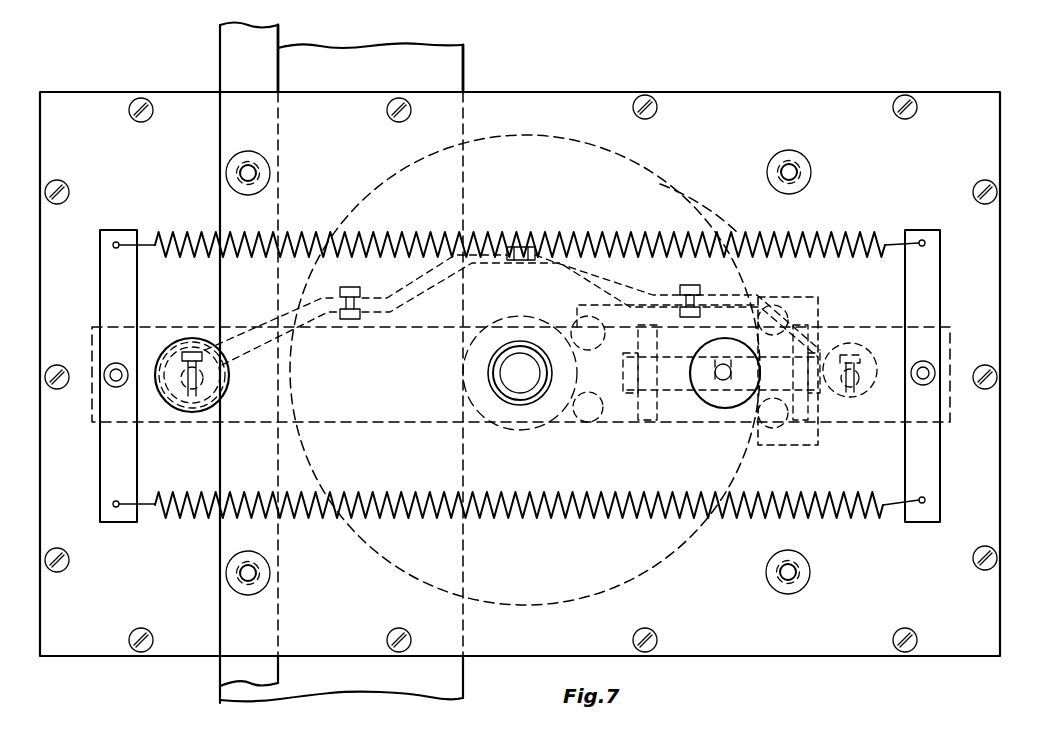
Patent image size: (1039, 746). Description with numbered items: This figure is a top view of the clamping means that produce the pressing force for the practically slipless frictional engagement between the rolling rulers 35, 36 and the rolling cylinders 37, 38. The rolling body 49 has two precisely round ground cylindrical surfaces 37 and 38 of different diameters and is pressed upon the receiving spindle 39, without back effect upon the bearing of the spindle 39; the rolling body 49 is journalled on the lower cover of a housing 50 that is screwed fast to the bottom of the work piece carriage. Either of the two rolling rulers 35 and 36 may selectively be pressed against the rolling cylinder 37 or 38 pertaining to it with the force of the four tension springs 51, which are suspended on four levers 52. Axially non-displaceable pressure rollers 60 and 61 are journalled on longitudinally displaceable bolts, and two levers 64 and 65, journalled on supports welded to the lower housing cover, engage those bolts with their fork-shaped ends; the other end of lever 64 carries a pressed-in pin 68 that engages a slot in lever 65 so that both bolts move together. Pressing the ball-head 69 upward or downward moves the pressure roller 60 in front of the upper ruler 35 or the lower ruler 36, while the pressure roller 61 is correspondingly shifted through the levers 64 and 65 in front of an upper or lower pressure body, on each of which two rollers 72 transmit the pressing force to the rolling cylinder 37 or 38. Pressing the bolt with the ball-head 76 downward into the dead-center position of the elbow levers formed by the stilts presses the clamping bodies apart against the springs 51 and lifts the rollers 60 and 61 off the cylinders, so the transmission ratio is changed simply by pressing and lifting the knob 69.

The rolling ruler 35 is at (247, 43).
The rolling ruler 36 is at (387, 60).
The rolling cylinder 37 is at (572, 140).
The rolling cylinder 38 is at (515, 317).
The receiving spindle 39 is at (508, 400).
The rolling body 49 is at (697, 213).
The housing 50 is at (987, 138).
The tension spring 51 is at (825, 232).
The lever 52 is at (115, 258).
The pressure roller 60 is at (182, 392).
The pressure roller 61 is at (863, 347).
The lever 64 is at (425, 272).
The lever 65 is at (607, 280).
The pin 68 is at (528, 247).
The ball-head 69 is at (167, 350).
The roller 72 is at (600, 348).
The ball-head 76 is at (702, 398).